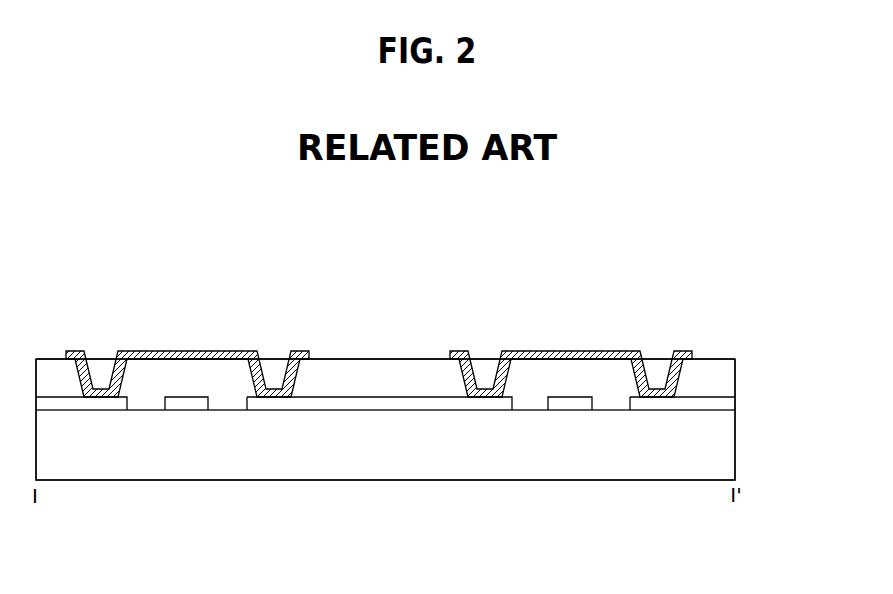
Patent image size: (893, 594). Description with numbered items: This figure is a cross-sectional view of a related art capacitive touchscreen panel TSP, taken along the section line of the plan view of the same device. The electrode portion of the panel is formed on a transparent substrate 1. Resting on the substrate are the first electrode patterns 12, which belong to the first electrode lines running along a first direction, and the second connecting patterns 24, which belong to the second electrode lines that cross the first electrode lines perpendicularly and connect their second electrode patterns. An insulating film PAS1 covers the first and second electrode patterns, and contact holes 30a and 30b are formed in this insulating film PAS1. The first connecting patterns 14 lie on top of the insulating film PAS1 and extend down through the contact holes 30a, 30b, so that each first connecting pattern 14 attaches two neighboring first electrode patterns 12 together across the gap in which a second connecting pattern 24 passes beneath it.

The capacitive touchscreen panel TSP is at (80, 252).
The substrate 1 is at (725, 443).
The insulating film PAS1 is at (725, 378).
The first electrode patterns 12 is at (88, 402).
The second connecting patterns 24 is at (183, 402).
The first connecting patterns 14 is at (186, 351).
The contact hole 30a is at (106, 366).
The contact hole 30b is at (277, 366).